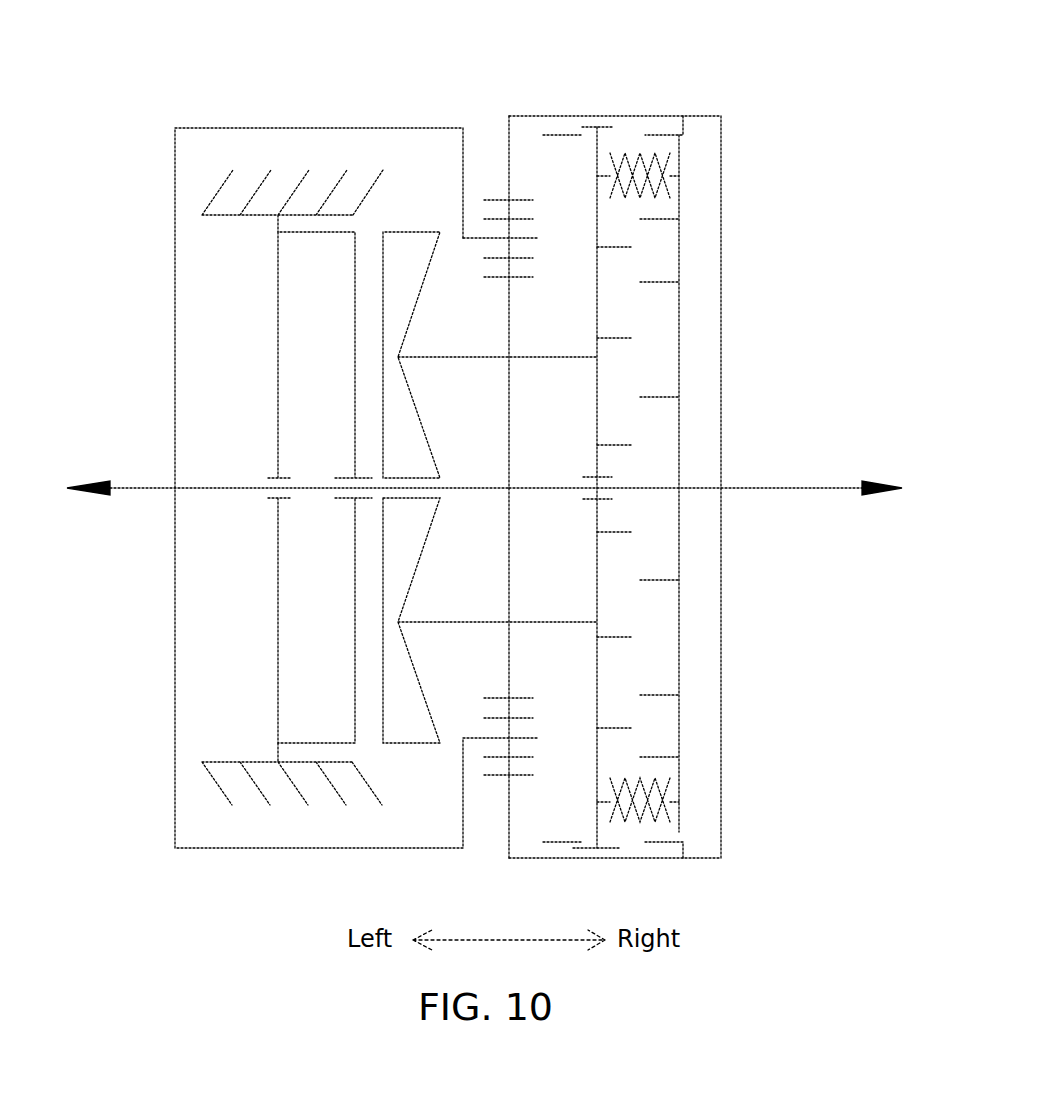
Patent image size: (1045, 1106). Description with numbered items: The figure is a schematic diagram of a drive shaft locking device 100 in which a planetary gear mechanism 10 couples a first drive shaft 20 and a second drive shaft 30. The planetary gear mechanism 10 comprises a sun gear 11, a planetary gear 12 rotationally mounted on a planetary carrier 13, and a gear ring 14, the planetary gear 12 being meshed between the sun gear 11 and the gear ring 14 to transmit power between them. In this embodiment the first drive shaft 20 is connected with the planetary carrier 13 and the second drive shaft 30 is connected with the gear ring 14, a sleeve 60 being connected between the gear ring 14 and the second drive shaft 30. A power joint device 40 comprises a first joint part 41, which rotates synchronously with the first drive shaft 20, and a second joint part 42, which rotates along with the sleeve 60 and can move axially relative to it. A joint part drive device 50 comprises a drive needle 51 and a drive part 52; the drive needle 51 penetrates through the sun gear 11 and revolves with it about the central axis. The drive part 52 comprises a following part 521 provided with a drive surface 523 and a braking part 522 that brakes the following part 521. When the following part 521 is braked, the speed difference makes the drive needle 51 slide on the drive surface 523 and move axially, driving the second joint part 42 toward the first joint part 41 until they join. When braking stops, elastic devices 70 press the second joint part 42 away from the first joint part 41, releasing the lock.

The drive shaft locking device 100 is at (607, 77).
The planetary gear mechanism 10 is at (500, 145).
The sun gear 11 is at (509, 455).
The planetary gear 12 is at (517, 765).
The planetary carrier 13 is at (173, 418).
The gear ring 14 is at (505, 777).
The first drive shaft 20 is at (153, 492).
The second drive shaft 30 is at (800, 492).
The power joint device 40 is at (717, 483).
The first joint part 41 is at (680, 580).
The second joint part 42 is at (597, 655).
The joint part drive device 50 is at (372, 218).
The drive needle 51 is at (563, 363).
The drive part 52 is at (362, 444).
The following part 521 is at (382, 273).
The braking part 522 is at (322, 350).
The drive surface 523 is at (440, 240).
The sleeve 60 is at (683, 115).
The elastic device 70 is at (655, 167).